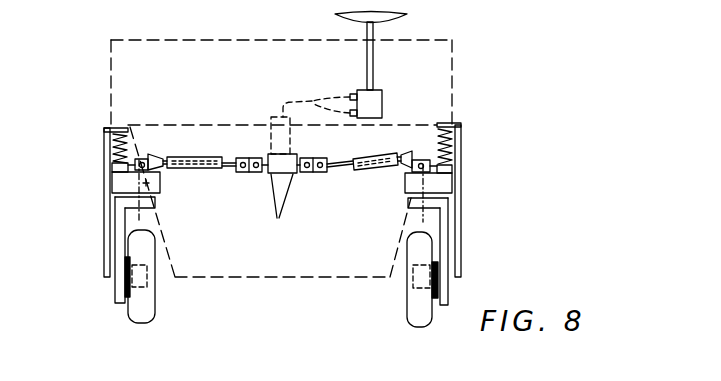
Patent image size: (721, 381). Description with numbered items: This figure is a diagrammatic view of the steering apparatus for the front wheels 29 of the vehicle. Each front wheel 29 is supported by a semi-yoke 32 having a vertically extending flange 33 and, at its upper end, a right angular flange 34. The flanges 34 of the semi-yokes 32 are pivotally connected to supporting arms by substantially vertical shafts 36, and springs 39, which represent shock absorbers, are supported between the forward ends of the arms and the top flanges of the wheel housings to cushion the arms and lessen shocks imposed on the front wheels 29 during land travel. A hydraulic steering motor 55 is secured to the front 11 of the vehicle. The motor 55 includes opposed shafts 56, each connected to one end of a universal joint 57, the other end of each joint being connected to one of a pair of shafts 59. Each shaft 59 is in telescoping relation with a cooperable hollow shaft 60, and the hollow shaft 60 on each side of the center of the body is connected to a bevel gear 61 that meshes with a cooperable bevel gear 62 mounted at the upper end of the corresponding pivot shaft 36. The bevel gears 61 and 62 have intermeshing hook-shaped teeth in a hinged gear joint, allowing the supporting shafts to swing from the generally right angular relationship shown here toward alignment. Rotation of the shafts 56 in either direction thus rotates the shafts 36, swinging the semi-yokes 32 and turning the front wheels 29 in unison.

The front 11 is at (281, 158).
The front wheels 29 is at (147, 312).
The semi-yokes 32 is at (110, 220).
The flanges 33 is at (118, 247).
The right angular flanges 34 is at (149, 208).
The shafts 36 is at (160, 184).
The springs 39 is at (110, 143).
The hydraulic steering motor 55 is at (283, 153).
The opposed shafts 56 is at (276, 217).
The universal joints 57 is at (247, 156).
The shafts 59 is at (260, 173).
The hollow shafts 60 is at (190, 156).
The bevel gear 61 is at (153, 152).
The bevel gear 62 is at (118, 163).